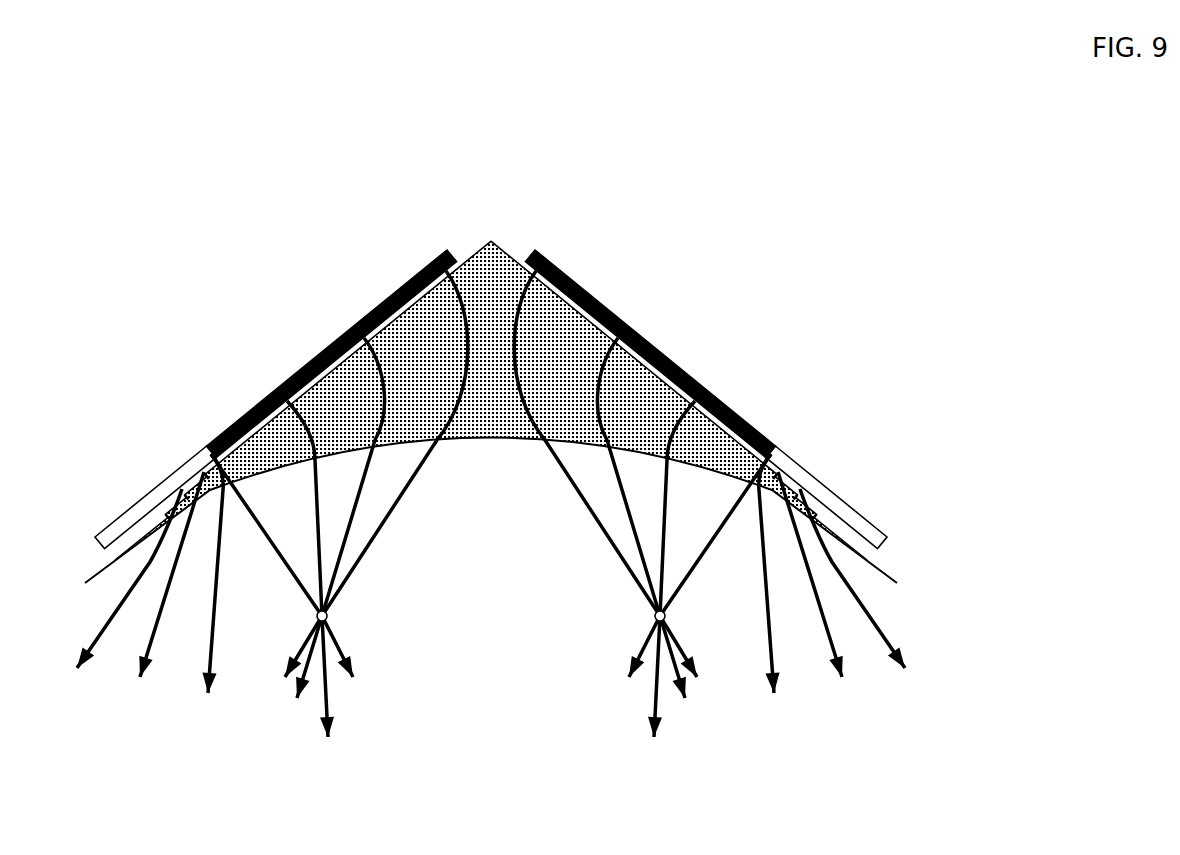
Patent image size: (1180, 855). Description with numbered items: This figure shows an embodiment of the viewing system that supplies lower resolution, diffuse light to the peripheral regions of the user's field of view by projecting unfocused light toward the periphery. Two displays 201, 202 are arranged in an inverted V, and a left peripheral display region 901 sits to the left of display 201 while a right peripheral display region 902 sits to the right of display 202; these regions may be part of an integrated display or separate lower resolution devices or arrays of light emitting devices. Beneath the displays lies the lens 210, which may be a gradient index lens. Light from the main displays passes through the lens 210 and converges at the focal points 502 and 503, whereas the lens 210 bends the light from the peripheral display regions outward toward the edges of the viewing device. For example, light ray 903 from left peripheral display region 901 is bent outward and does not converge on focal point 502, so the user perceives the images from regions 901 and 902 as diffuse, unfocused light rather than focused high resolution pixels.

The display 201 is at (330, 340).
The display 202 is at (652, 340).
The lens 210 is at (488, 265).
The focal point 502 is at (333, 617).
The focal point 503 is at (647, 610).
The left peripheral display region 901 is at (165, 478).
The right peripheral display region 902 is at (802, 460).
The light ray 903 is at (150, 677).